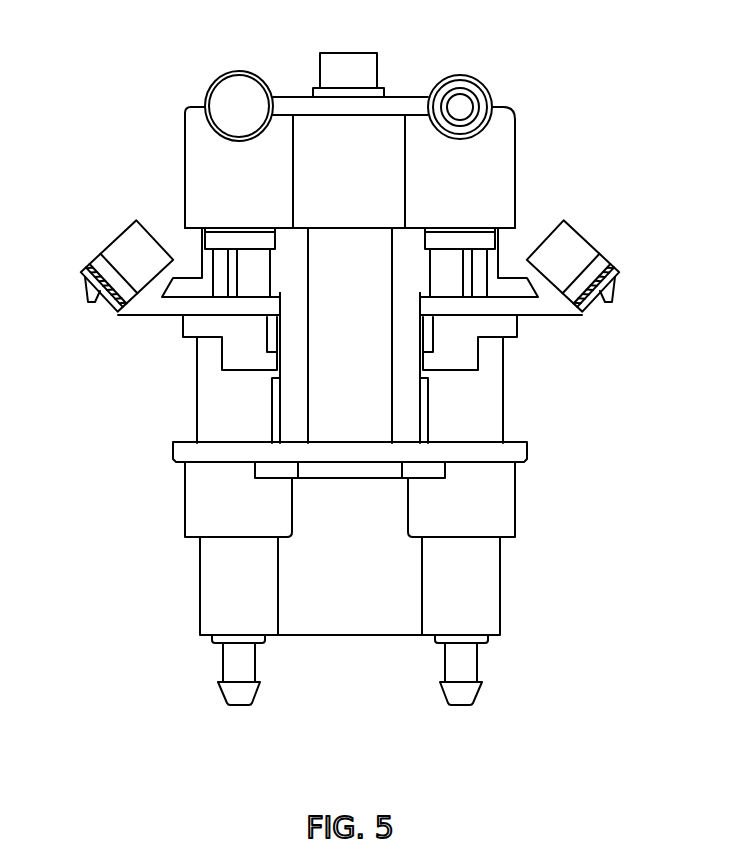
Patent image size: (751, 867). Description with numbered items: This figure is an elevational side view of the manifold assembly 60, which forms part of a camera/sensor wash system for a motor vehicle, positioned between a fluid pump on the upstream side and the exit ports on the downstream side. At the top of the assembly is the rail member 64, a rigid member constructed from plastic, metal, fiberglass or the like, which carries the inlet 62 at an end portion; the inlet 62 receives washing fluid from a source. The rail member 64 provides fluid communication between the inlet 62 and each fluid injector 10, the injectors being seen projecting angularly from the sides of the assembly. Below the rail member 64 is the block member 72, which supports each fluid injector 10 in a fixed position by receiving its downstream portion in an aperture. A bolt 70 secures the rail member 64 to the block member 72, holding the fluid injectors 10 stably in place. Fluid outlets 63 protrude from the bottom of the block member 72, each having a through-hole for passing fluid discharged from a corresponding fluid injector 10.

The manifold assembly 60 is at (683, 95).
The inlet 62 is at (458, 75).
The fluid outlet 63 is at (237, 692).
The rail member 64 is at (188, 177).
The bolt 70 is at (348, 53).
The block member 72 is at (347, 622).
The fluid injector 10 is at (112, 250).